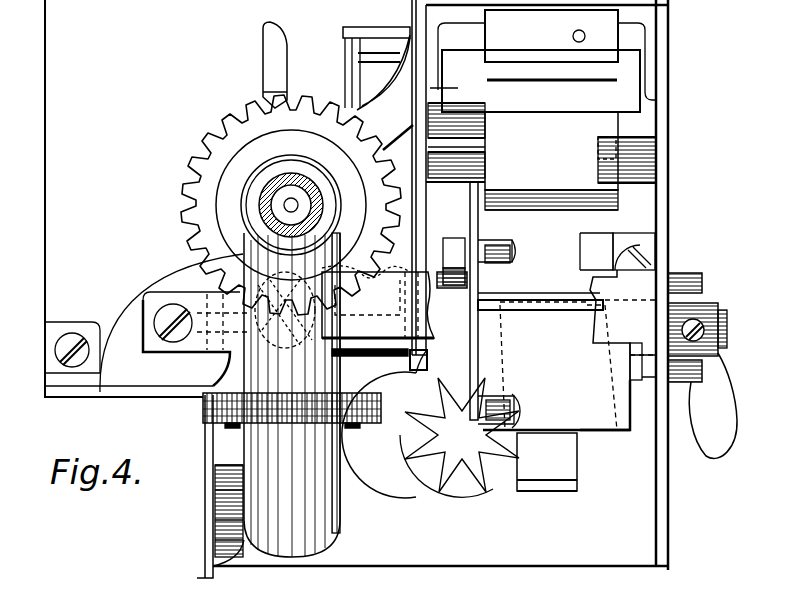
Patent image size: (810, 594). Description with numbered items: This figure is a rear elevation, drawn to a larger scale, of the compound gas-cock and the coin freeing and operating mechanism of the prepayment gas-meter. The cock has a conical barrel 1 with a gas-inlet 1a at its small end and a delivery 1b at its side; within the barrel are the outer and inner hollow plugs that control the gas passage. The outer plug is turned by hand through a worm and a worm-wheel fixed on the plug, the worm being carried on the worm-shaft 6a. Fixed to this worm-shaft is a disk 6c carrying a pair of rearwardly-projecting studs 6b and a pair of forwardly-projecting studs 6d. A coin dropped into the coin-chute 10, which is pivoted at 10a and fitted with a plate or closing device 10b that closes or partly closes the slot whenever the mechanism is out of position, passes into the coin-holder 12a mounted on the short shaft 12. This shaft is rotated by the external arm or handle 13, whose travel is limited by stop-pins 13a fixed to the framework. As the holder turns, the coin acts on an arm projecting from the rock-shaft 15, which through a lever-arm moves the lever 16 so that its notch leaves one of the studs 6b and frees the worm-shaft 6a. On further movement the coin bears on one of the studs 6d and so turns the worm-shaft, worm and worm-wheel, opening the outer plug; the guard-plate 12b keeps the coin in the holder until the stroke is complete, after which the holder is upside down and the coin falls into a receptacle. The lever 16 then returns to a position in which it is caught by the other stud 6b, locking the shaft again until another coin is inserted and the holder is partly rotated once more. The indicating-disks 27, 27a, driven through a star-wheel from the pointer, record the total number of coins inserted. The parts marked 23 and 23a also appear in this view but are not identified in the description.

The barrel 1 is at (240, 150).
The gas-inlet 1a is at (260, 200).
The delivery 1b is at (311, 399).
The post with cam 23 is at (352, 73).
The pawl 23a is at (273, 45).
The coin-chute 10 is at (549, 130).
The pivot of coin-chute 10a is at (455, 164).
The plate or closing device 10b is at (536, 48).
The rock-shaft 15 is at (456, 120).
The lever 16 is at (462, 250).
The worm-shaft 6a is at (378, 321).
The rearwardly-projecting studs 6b is at (450, 290).
The disk 6c is at (478, 290).
The forwardly-projecting studs 6d is at (508, 252).
The short shaft 12 is at (722, 340).
The coin-holder 12a is at (569, 350).
The guard-plate 12b is at (547, 462).
The arm or handle 13 is at (713, 405).
The stop-pins 13a is at (700, 275).
The indicating-disk 27 is at (384, 424).
The indicating-disk 27a is at (445, 470).